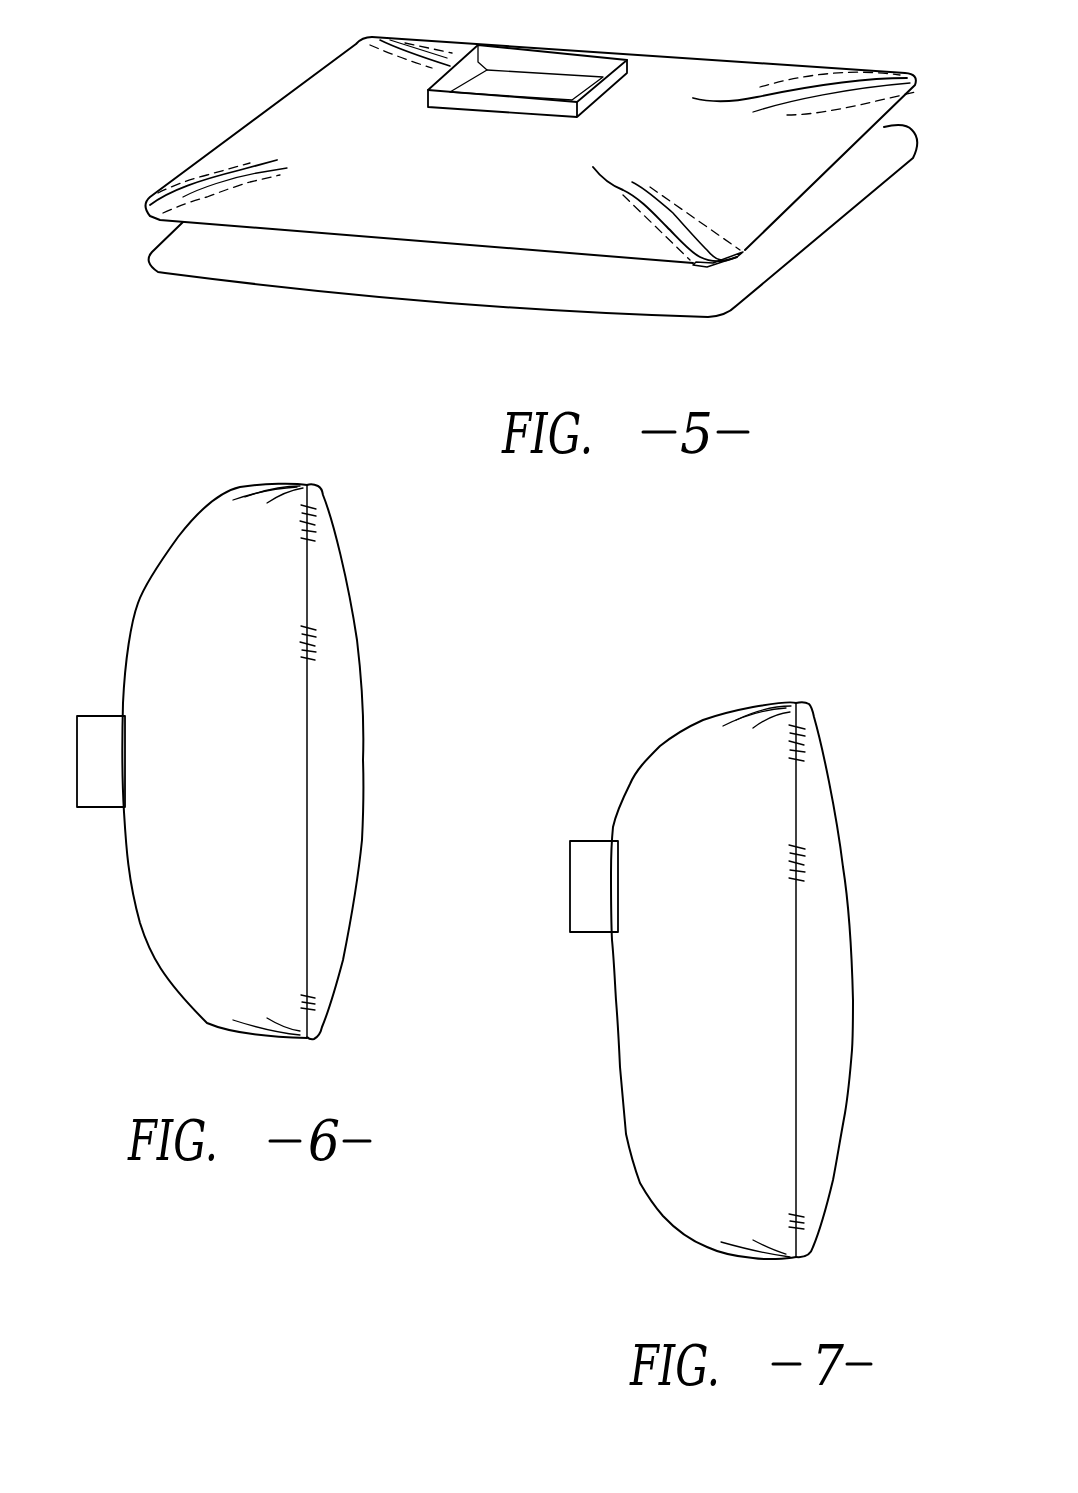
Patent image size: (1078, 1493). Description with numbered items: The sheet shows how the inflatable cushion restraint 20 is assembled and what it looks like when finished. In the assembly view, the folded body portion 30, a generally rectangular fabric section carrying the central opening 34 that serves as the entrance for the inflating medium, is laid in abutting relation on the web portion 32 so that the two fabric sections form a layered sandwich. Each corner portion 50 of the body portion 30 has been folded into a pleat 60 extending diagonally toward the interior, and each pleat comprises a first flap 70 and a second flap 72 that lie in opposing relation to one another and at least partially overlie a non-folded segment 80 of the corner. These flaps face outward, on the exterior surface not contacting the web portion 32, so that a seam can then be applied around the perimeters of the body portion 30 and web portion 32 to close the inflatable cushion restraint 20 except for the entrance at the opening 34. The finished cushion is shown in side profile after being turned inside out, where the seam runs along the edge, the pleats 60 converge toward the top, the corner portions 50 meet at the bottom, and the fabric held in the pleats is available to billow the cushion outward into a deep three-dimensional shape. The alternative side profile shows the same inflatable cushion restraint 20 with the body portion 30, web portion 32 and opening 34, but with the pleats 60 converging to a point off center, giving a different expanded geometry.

In FIG. 6, the inflatable cushion restraint 20 is at (241, 729).
In FIG. 5, the body portion 30 is at (700, 54).
In FIG. 6, the body portion 30 is at (220, 517).
In FIG. 7, the body portion 30 is at (710, 740).
In FIG. 5, the web portion 32 is at (497, 310).
In FIG. 6, the web portion 32 is at (363, 833).
In FIG. 7, the web portion 32 is at (852, 1050).
In FIG. 5, the opening 34 is at (552, 73).
In FIG. 6, the opening 34 is at (120, 810).
In FIG. 7, the opening 34 is at (611, 938).
In FIG. 6, the corner portion 50 is at (295, 1040).
In FIG. 7, the corner portion 50 is at (786, 1263).
In FIG. 6, the pleat 60 is at (270, 487).
In FIG. 7, the pleat 60 is at (763, 707).
In FIG. 5, the first flap 70 is at (594, 334).
In FIG. 5, the second flap 72 is at (660, 272).
In FIG. 5, the non-folded segment 80 is at (723, 262).